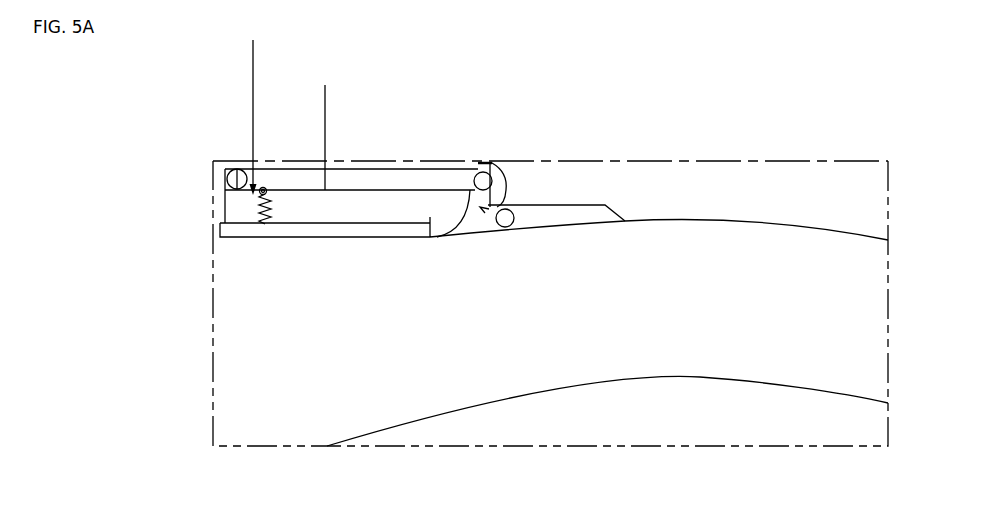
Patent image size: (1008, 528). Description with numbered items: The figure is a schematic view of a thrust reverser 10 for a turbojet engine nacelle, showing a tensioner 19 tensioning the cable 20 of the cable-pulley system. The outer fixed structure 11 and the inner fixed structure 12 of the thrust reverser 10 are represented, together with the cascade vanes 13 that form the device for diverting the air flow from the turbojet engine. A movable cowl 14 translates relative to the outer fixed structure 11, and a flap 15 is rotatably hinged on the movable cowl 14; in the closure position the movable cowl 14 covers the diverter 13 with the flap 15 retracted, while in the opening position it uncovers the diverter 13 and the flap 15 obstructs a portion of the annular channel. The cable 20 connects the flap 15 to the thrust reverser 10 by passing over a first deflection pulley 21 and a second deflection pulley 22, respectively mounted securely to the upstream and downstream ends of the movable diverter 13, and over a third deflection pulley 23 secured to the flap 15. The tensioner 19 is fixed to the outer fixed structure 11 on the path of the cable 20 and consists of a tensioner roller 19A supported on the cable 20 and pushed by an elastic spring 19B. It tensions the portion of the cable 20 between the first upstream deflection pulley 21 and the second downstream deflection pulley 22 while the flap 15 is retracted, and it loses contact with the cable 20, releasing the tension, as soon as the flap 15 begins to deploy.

The thrust reverser 10 is at (247, 135).
The outer fixed structure 11 is at (228, 232).
The inner fixed structure 12 is at (690, 422).
The cascade vanes 13 is at (383, 178).
The movable cowl 14 is at (783, 185).
The flap 15 is at (549, 244).
The tensioner 19 is at (252, 106).
The tensioner roller 19A is at (266, 188).
The elastic spring 19B is at (258, 210).
The cable 20 is at (324, 127).
The first deflection pulley 21 is at (219, 171).
The second deflection pulley 22 is at (472, 159).
The third deflection pulley 23 is at (507, 243).